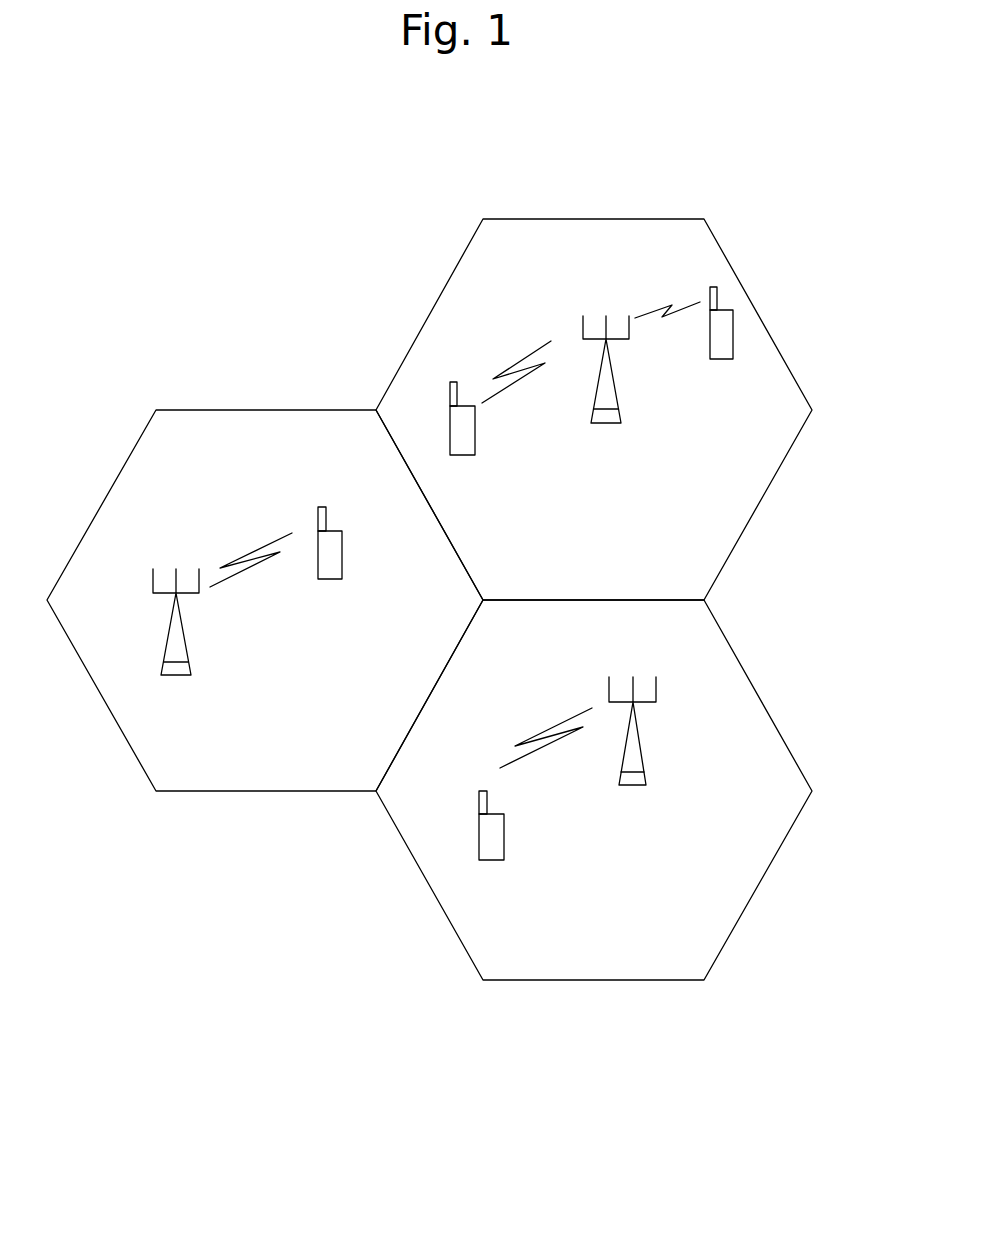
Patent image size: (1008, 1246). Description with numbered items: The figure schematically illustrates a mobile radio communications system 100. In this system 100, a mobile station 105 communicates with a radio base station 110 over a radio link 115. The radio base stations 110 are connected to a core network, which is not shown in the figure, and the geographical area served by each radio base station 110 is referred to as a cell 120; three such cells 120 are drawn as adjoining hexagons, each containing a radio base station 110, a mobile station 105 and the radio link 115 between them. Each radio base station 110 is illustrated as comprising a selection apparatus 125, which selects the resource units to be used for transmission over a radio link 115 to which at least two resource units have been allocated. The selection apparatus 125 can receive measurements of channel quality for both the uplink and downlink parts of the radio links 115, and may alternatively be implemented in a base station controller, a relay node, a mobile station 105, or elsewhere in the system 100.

The mobile radio communications system 100 is at (537, 1054).
The mobile station 105 is at (456, 456).
The radio base station 110 is at (613, 383).
The radio link 115 is at (515, 368).
The cell 120 is at (763, 495).
The selection apparatus 125 is at (603, 424).